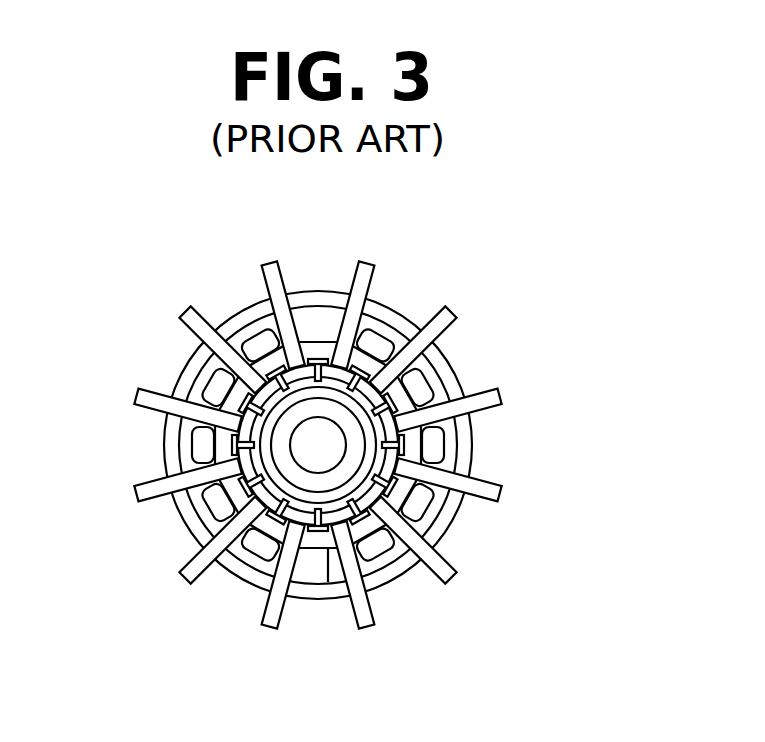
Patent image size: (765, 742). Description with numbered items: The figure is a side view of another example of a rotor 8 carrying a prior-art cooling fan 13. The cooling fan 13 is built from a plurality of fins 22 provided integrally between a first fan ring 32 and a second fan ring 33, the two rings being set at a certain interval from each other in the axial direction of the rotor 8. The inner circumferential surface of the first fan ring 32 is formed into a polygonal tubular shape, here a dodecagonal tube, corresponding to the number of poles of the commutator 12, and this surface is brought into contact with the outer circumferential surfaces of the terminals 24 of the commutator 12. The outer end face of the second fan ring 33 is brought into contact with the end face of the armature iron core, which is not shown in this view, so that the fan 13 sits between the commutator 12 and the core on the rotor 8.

The rotor 8 is at (172, 355).
The commutator 12 is at (458, 549).
The cooling fan 13 is at (497, 473).
The fins 22 is at (427, 573).
The terminals 24 is at (455, 398).
The first fan ring 32 is at (400, 308).
The second fan ring 33 is at (250, 317).